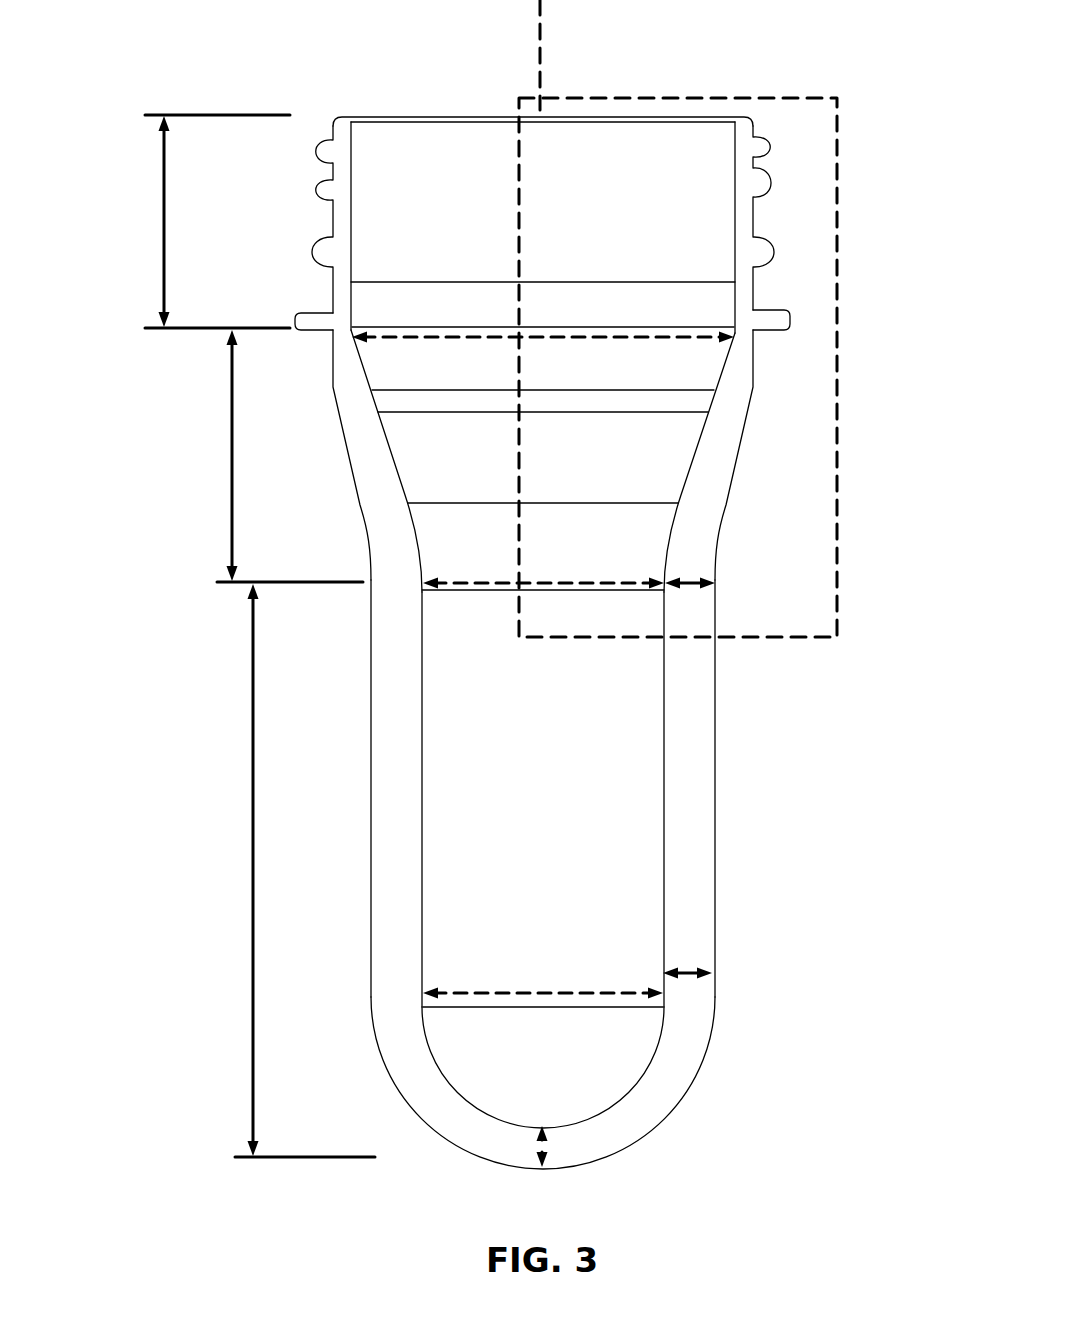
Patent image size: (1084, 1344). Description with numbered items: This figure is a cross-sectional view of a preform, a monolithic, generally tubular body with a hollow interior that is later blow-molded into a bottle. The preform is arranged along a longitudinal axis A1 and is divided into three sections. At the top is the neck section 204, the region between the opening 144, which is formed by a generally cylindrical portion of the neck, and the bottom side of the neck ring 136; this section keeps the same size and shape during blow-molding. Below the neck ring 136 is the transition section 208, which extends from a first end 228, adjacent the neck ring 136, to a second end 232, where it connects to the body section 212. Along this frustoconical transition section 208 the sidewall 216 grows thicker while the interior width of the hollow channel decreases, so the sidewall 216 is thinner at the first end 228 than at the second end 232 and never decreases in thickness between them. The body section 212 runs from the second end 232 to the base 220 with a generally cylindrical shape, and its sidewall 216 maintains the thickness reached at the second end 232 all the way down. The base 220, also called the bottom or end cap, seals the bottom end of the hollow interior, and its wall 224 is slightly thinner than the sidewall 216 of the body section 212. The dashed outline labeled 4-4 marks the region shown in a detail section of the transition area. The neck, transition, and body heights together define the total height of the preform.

The opening 144 is at (408, 117).
The neck section 204 is at (501, 282).
The transition section 208 is at (492, 513).
The body section 212 is at (509, 904).
The neck ring 136 is at (790, 312).
The first end 228 is at (878, 428).
The second end 232 is at (733, 597).
The sidewall 216 is at (697, 835).
The wall 224 is at (628, 1127).
The base 220 is at (577, 1162).
The section line 4-4 is at (837, 583).
The longitudinal axis A1 is at (541, 47).